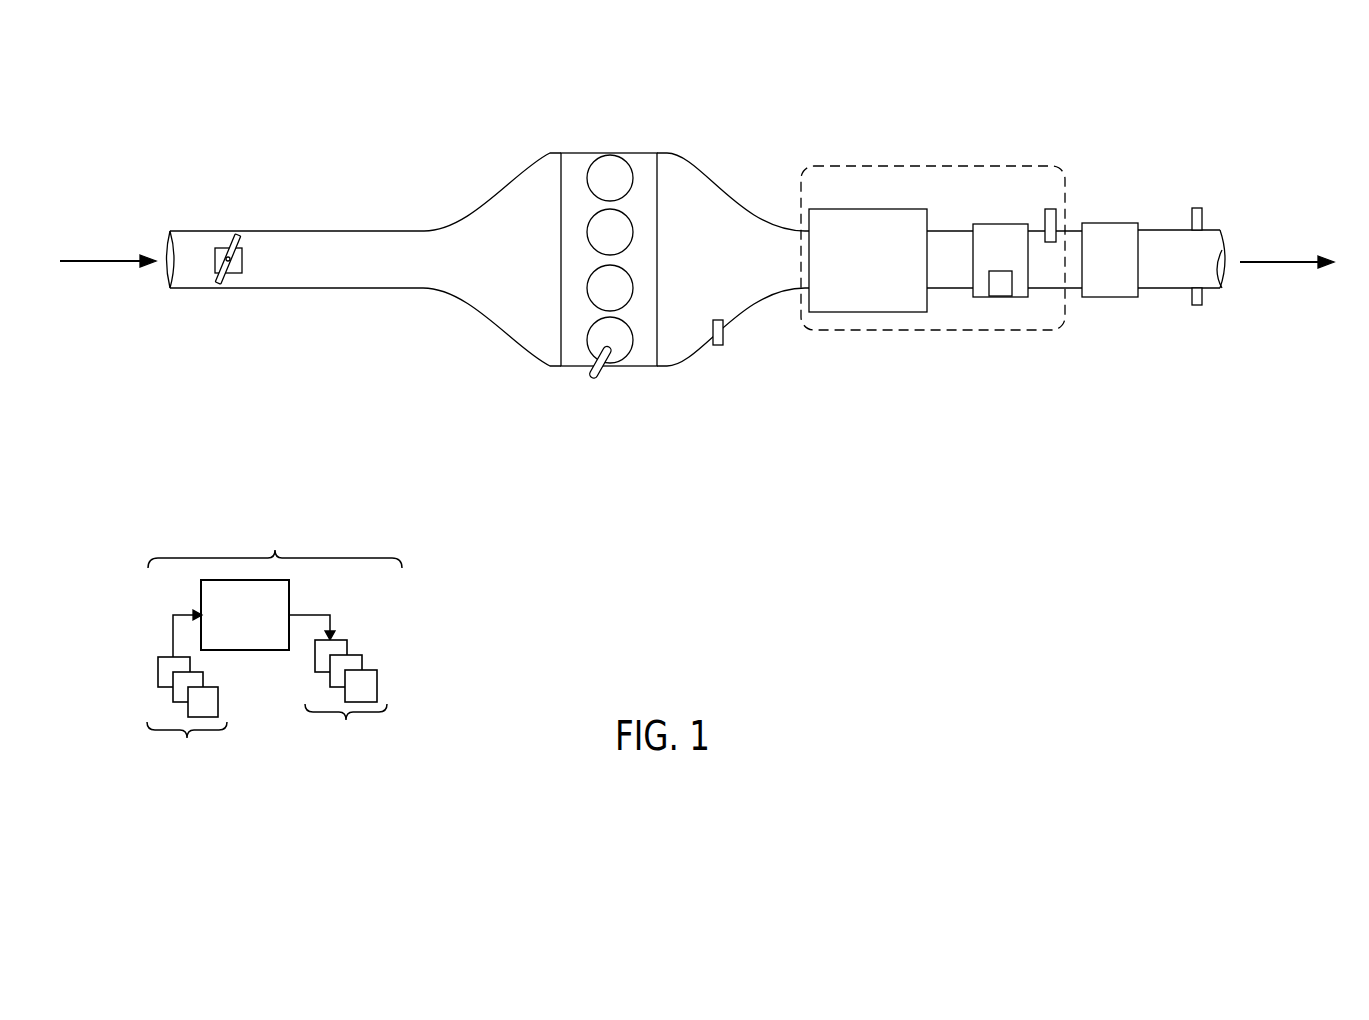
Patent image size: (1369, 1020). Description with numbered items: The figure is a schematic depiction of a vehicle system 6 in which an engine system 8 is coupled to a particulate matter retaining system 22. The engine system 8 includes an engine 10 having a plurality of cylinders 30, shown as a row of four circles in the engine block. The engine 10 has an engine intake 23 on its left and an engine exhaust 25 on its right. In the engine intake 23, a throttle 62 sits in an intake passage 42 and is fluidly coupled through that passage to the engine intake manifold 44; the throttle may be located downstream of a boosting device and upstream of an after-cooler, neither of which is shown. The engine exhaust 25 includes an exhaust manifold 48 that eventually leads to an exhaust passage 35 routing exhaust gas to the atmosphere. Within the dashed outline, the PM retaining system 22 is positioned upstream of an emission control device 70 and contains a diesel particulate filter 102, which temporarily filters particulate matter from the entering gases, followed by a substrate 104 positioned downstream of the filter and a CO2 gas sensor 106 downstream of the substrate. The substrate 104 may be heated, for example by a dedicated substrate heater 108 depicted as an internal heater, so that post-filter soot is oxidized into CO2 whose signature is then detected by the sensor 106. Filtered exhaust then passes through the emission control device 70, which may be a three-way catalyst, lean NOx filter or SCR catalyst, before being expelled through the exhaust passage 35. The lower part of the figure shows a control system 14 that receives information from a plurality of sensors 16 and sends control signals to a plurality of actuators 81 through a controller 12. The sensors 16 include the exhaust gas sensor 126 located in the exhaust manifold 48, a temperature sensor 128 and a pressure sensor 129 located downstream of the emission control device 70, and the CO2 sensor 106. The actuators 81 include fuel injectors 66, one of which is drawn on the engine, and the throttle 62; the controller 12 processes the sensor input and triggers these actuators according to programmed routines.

The vehicle system 6 is at (118, 88).
The engine system 8 is at (630, 224).
The engine 10 is at (658, 242).
The controller 12 is at (245, 615).
The control system 14 is at (274, 641).
The sensors 16 is at (187, 693).
The particulate matter retaining system 22 is at (1002, 166).
The engine intake 23 is at (367, 208).
The engine exhaust 25 is at (735, 168).
The cylinders 30 is at (632, 173).
The exhaust passage 35 is at (1158, 228).
The intake passage 42 is at (272, 289).
The engine intake manifold 44 is at (492, 259).
The exhaust manifold 48 is at (733, 259).
The throttle 62 is at (241, 266).
The fuel injectors 66 is at (606, 370).
The emission control device 70 is at (1110, 260).
The actuators 81 is at (338, 688).
The diesel particulate filter 102 is at (891, 260).
The substrate 104 is at (1027, 260).
The CO2 gas sensor 106 is at (1045, 222).
The substrate heater 108 is at (1003, 298).
The exhaust gas sensor 126 is at (720, 328).
The temperature sensor 128 is at (1192, 296).
The pressure sensor 129 is at (1192, 218).